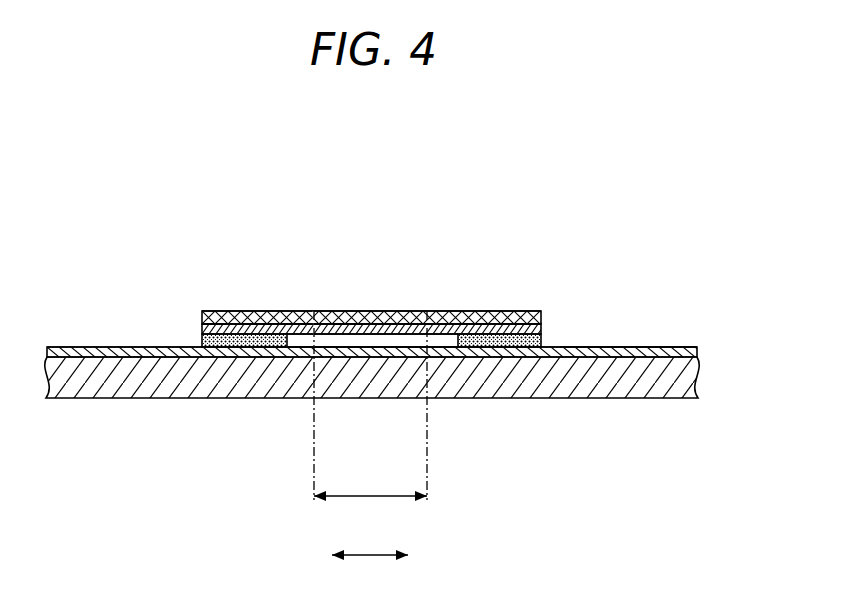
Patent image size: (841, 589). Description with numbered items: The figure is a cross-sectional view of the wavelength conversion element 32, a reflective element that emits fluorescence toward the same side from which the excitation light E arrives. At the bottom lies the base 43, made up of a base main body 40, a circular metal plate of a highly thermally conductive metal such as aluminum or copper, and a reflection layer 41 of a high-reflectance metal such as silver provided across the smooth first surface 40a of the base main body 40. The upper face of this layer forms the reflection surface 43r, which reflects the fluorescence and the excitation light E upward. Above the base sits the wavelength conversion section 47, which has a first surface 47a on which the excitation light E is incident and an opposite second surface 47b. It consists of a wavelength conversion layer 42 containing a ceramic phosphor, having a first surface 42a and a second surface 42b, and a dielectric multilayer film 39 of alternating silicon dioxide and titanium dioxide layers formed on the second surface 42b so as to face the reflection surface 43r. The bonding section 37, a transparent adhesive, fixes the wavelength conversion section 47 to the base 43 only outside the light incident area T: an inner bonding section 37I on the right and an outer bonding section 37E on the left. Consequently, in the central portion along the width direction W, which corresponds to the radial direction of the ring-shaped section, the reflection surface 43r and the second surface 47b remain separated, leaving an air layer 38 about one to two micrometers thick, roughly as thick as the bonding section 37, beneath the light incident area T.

The wavelength conversion element 32 is at (565, 181).
The bonding section 37 is at (372, 407).
The bonding section 37E is at (213, 345).
The bonding section 37I is at (525, 347).
The air layer 38 is at (340, 343).
The dielectric multilayer film 39 is at (526, 333).
The base main body 40 is at (82, 385).
The first surface 40a is at (657, 347).
The reflection layer 41 is at (121, 355).
The wavelength conversion layer 42 is at (488, 313).
The first surface 42a is at (409, 311).
The second surface 42b is at (291, 329).
The base 43 is at (145, 453).
The reflection surface 43r is at (101, 347).
The wavelength conversion section 47 is at (548, 240).
The first surface 47a is at (371, 232).
The second surface 47b is at (398, 333).
The excitation light E is at (313, 309).
The light incident area T is at (462, 195).
The width direction W is at (370, 540).